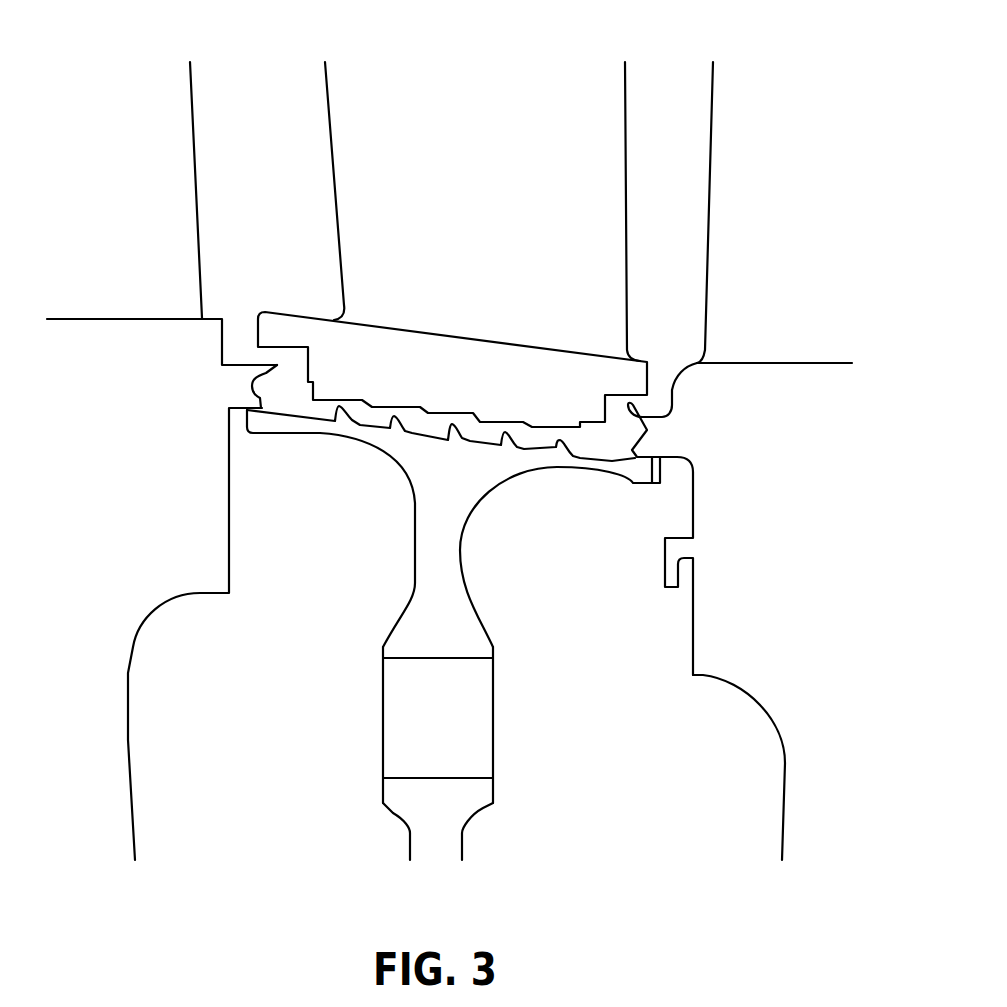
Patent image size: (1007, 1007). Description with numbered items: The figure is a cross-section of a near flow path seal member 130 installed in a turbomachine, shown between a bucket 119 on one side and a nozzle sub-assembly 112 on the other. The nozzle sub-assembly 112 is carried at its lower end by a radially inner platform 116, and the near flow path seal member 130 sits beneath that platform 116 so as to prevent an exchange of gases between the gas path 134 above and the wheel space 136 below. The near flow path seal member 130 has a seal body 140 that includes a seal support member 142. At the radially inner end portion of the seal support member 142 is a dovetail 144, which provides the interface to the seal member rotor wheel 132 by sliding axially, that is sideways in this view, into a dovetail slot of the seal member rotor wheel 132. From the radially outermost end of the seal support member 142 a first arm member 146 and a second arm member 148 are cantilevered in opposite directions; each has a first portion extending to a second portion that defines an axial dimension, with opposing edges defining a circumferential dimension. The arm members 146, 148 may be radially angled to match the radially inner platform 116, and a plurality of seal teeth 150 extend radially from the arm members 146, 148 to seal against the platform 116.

The nozzle sub-assembly 112 is at (478, 162).
The radially inner platform 116 is at (497, 341).
The bucket 119 is at (142, 222).
The near flow path seal member 130 is at (512, 602).
The seal member rotor wheel 132 is at (420, 822).
The gas path 134 is at (267, 173).
The wheel space 136 is at (205, 693).
The seal body 140 is at (398, 615).
The seal support member 142 is at (450, 555).
The dovetail 144 is at (468, 737).
The first arm member 146 is at (272, 437).
The second arm member 148 is at (620, 508).
The seal teeth 150 is at (338, 404).